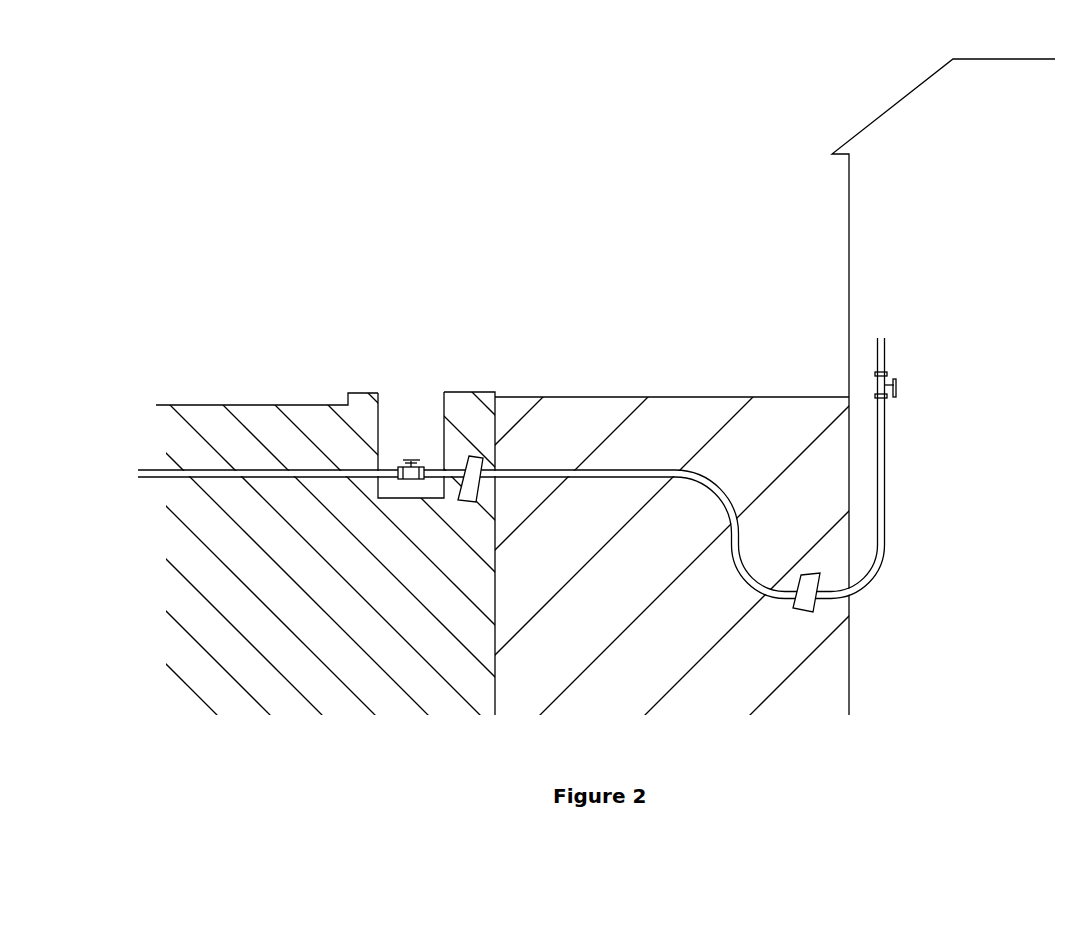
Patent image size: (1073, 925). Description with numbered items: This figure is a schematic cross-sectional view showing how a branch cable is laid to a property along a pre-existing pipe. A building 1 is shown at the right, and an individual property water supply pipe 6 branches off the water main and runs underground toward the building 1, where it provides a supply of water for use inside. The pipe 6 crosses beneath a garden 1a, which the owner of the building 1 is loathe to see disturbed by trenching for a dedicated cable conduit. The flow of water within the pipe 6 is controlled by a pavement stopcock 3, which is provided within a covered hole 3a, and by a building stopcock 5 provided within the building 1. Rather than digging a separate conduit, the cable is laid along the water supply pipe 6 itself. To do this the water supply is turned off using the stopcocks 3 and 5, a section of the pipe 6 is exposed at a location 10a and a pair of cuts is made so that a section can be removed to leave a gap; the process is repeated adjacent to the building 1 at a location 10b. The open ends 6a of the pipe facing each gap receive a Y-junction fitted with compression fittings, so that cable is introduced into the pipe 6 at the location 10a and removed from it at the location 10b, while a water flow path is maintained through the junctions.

The building 1 is at (908, 93).
The garden 1a is at (799, 395).
The pavement stopcock 3 is at (411, 454).
The covered hole 3a is at (374, 405).
The building stopcock 5 is at (908, 384).
The water supply pipe 6 is at (652, 468).
The open end of the water supply pipe 6a is at (465, 503).
The location of first Y-junction 10a is at (472, 446).
The location of second Y-junction 10b is at (804, 613).